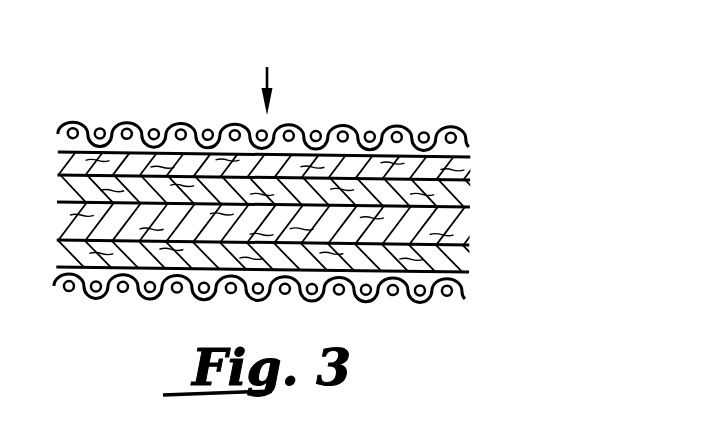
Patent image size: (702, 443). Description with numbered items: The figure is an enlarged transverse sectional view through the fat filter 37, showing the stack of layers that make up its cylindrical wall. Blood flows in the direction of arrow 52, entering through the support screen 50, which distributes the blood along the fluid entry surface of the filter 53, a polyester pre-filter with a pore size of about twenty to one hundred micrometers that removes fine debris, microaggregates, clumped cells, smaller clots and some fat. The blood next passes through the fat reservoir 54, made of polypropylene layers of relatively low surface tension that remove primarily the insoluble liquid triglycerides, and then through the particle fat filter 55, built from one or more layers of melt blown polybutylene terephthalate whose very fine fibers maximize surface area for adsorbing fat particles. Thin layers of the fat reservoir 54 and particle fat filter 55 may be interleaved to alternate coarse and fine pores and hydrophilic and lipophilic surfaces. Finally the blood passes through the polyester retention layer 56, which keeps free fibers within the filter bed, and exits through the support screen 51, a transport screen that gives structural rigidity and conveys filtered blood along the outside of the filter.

The fat filter 37 is at (326, 208).
The support screen 50 is at (369, 135).
The support screen 51 is at (423, 300).
The arrow 52 is at (268, 76).
The filter 53 is at (446, 153).
The fat reservoir 54 is at (467, 193).
The particle fat filter 55 is at (467, 233).
The retention layer 56 is at (464, 259).